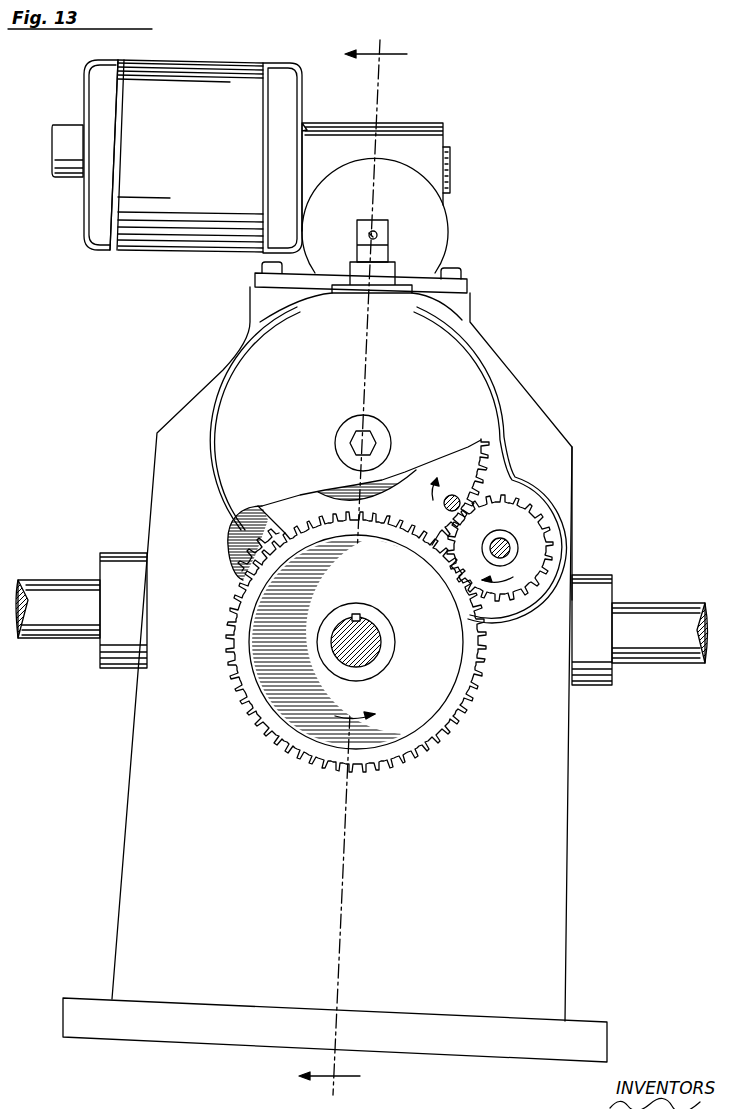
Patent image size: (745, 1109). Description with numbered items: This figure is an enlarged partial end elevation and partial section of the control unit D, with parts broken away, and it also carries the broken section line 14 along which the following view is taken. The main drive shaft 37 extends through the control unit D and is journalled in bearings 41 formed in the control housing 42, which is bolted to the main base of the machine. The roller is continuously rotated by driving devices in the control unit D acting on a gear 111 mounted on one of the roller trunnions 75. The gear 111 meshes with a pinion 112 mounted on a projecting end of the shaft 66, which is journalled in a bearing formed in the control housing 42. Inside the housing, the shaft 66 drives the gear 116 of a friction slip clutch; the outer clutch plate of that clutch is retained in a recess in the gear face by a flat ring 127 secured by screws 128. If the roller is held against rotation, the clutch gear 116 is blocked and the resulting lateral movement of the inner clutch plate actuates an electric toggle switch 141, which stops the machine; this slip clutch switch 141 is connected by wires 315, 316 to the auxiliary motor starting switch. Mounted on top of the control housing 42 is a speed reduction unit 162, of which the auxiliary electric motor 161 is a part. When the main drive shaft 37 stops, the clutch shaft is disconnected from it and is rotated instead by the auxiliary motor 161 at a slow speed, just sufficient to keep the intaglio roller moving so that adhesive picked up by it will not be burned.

The section line 14- 14 is at (366, 573).
The auxiliary electric motor 161 is at (177, 156).
The speed reduction unit 162 is at (435, 222).
The electric toggle switch 141 is at (390, 240).
The wire 315 is at (376, 231).
The wire 316 is at (369, 236).
The control housing 42 is at (563, 834).
The control unit D is at (572, 447).
The main drive shaft 37 is at (65, 633).
The bearing 41 is at (118, 662).
The gear 111 is at (433, 727).
The roller trunnion 75 is at (367, 657).
The flat ring 127 is at (448, 464).
The gear of friction slip clutch 116 is at (490, 462).
The screw 128 is at (444, 507).
The pinion 112 is at (537, 543).
The shaft 66 is at (518, 528).